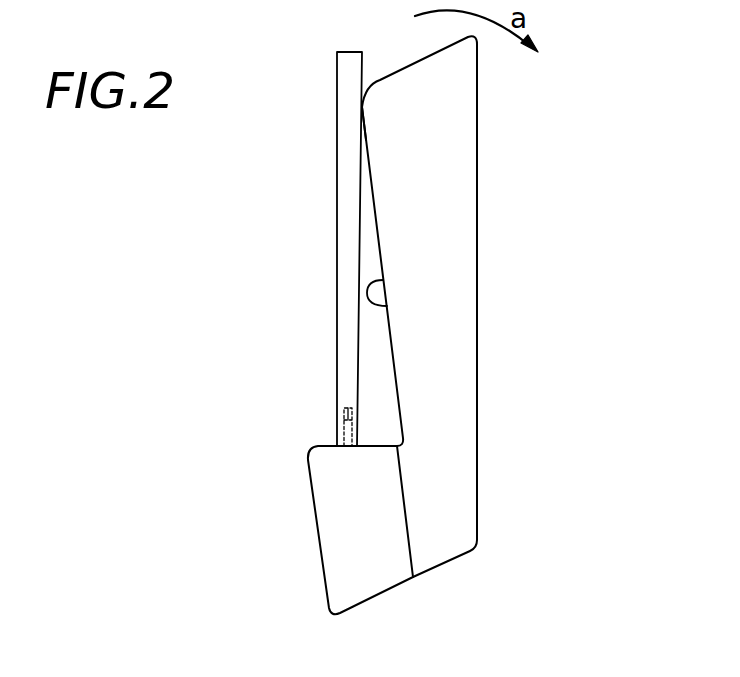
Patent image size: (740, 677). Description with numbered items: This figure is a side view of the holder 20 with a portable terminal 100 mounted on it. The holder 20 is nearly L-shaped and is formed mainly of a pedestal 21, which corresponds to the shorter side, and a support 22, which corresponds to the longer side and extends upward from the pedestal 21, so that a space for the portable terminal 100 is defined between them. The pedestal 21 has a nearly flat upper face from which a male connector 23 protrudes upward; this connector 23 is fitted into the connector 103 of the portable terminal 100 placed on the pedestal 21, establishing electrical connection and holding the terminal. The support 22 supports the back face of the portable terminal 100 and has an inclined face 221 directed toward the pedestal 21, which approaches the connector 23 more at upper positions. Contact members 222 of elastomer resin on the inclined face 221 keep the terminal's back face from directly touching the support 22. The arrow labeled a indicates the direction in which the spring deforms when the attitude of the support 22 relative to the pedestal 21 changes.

The holder 20 is at (410, 325).
The pedestal 21 is at (330, 558).
The support 22 is at (457, 480).
The inclined face 221 is at (387, 306).
The contact members 222 is at (358, 135).
The connector 23 is at (344, 433).
The portable terminal 100 is at (343, 197).
The connector 103 is at (355, 410).